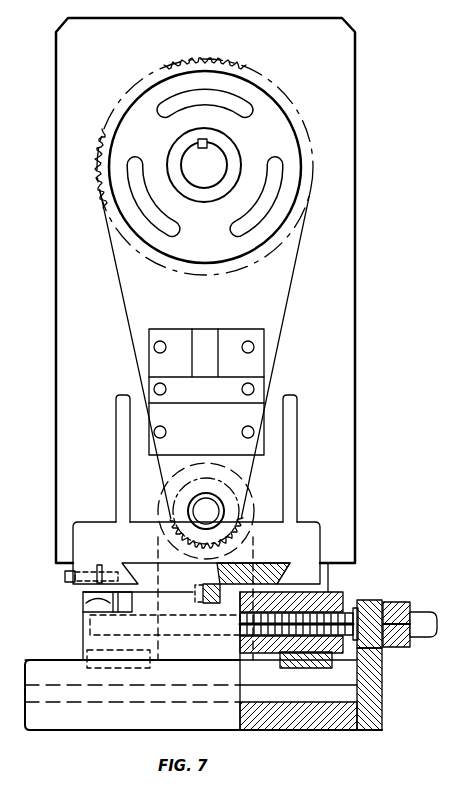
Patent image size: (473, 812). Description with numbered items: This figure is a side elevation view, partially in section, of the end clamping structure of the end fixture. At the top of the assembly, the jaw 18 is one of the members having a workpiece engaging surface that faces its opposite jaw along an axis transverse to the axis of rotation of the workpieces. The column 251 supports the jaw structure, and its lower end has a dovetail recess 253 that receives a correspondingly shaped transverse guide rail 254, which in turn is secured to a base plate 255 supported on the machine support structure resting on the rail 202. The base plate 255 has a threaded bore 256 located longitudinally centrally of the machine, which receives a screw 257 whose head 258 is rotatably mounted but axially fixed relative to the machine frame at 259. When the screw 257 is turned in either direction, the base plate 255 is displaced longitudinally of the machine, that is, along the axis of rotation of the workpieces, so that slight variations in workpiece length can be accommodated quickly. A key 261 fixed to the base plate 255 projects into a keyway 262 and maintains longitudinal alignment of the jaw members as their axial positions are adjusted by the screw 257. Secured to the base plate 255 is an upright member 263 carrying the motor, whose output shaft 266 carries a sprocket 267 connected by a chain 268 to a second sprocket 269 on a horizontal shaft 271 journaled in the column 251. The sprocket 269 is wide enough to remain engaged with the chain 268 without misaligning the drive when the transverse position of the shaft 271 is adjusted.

The jaw 18 is at (160, 362).
The rail 202 is at (78, 718).
The column 251 is at (153, 470).
The dovetail recess 253 is at (143, 564).
The transverse guide rail 254 is at (298, 547).
The base plate 255 is at (327, 593).
The threaded bore 256 is at (238, 637).
The screw 257 is at (382, 655).
The screw head 258 is at (407, 601).
The machine frame mounting 259 is at (370, 600).
The key 261 is at (332, 662).
The keyway 262 is at (320, 675).
The upright member 263 is at (58, 383).
The motor output shaft 266 is at (192, 158).
The sprocket 267 is at (93, 153).
The chain 268 is at (114, 283).
The sprocket 269 is at (177, 542).
The horizontal shaft 271 is at (200, 510).